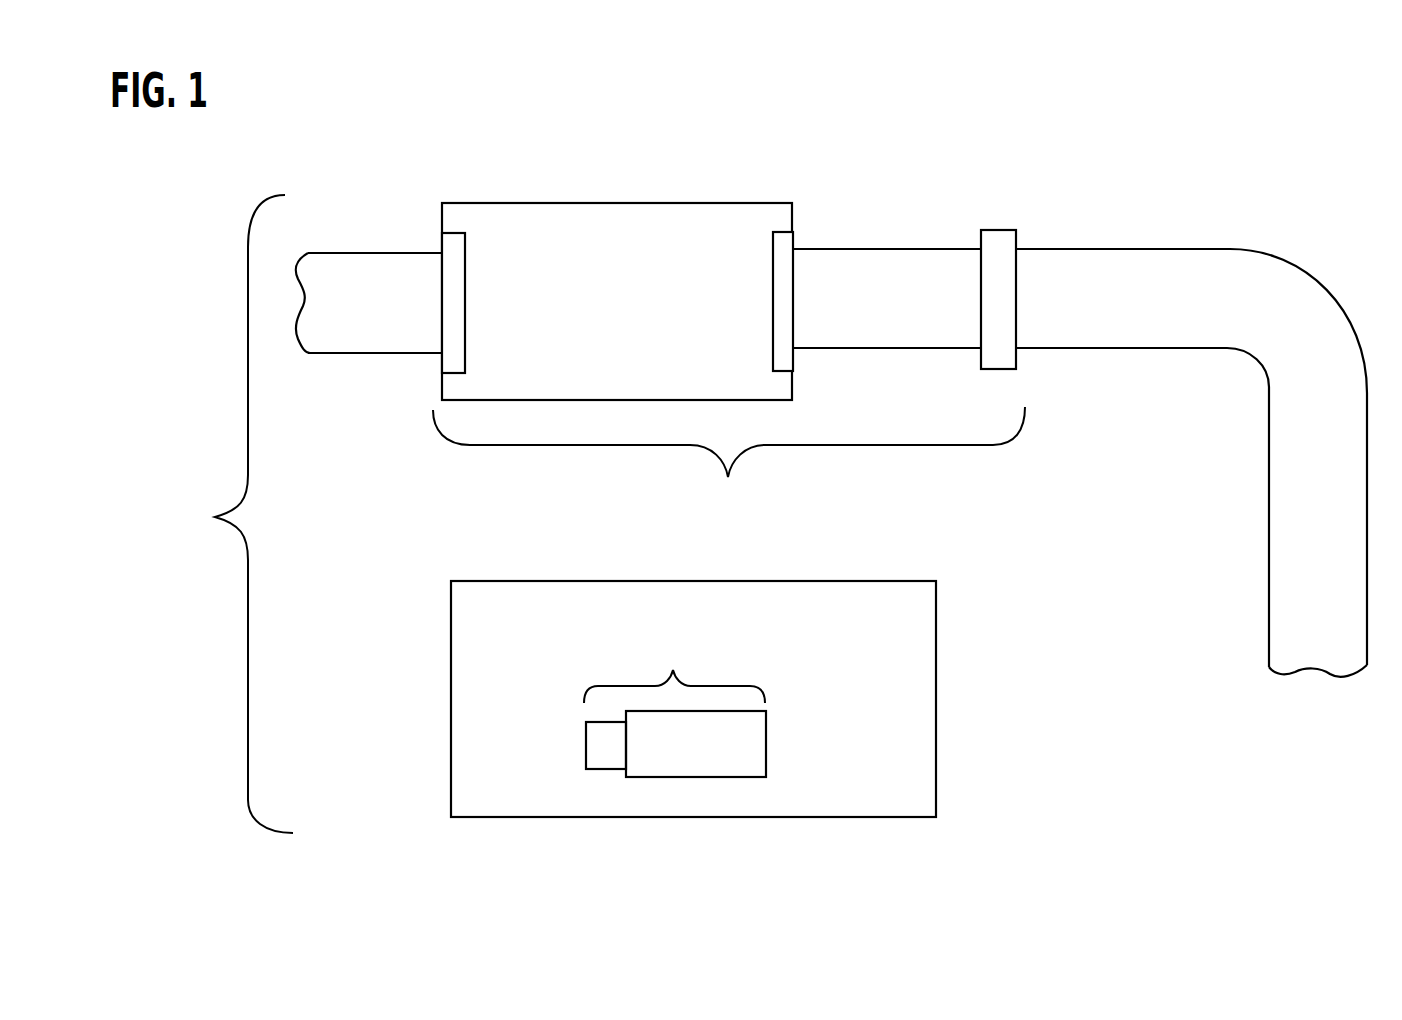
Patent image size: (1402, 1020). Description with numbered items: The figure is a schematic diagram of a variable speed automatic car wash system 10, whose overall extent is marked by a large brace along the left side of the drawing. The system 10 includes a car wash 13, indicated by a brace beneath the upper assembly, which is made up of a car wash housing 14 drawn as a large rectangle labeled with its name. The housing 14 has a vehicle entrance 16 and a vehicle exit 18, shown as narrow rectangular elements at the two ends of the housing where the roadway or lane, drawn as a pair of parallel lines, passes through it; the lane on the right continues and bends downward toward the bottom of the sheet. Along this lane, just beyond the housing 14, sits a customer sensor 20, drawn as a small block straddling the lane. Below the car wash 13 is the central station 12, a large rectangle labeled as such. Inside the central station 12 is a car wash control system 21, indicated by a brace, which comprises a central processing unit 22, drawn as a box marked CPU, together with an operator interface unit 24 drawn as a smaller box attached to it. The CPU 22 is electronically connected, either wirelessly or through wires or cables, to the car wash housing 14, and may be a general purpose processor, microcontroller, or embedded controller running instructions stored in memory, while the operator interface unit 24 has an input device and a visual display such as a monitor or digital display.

The variable speed automatic car wash system 10 is at (213, 517).
The central station 12 is at (877, 580).
The car wash 13 is at (729, 457).
The car wash housing 14 is at (755, 202).
The vehicle entrance 16 is at (796, 236).
The vehicle exit 18 is at (440, 238).
The customer sensor 20 is at (1018, 236).
The car wash control system 21 is at (674, 673).
The central processing unit (CPU) 22 is at (735, 778).
The operator interface unit 24 is at (600, 770).